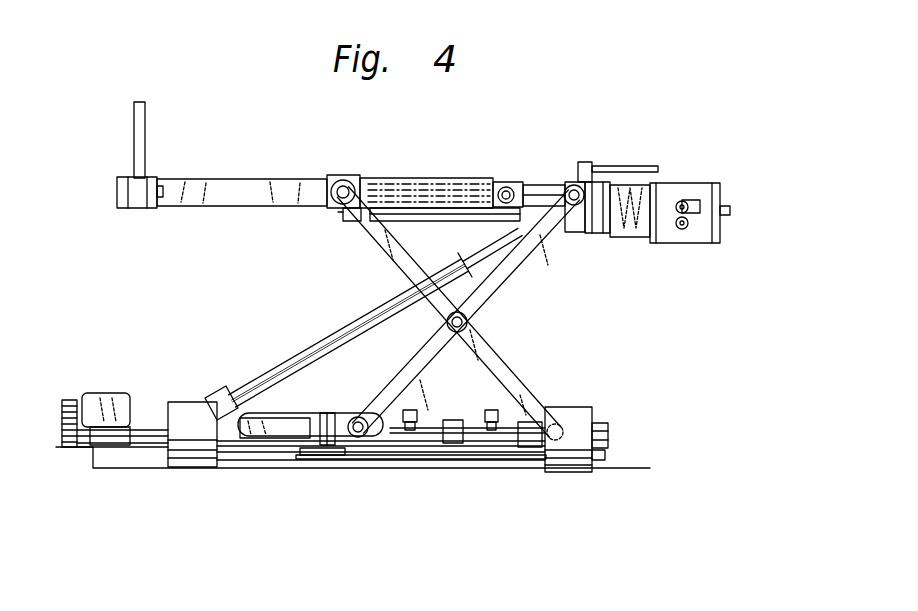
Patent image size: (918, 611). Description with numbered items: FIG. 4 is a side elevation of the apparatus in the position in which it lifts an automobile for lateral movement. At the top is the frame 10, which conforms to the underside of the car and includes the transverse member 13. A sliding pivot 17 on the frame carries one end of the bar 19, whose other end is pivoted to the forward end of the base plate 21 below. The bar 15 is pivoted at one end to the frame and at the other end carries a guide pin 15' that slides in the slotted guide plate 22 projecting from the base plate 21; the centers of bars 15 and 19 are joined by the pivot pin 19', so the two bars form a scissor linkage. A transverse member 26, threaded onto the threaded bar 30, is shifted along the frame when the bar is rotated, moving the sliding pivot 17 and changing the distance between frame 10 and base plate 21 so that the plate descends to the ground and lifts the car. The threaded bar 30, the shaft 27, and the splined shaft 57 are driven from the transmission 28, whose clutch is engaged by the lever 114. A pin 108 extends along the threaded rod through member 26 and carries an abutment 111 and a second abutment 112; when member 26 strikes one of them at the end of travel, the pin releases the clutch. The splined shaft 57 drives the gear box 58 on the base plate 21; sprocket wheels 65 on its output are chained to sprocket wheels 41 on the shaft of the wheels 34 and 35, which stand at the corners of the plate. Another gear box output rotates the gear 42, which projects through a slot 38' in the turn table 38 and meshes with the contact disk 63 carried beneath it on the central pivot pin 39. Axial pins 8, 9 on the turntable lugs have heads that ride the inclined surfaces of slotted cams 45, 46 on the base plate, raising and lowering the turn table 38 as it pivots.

The transverse member 13 is at (134, 135).
The frame 10 is at (240, 178).
The sliding pivot 17 is at (360, 178).
The abutment 111 is at (345, 222).
The pin 108 is at (430, 222).
The transverse member 26 is at (500, 182).
The threaded bar 30 is at (537, 185).
The abutment 112 is at (548, 222).
The transmission 28 is at (674, 243).
The lever 114 is at (688, 200).
The shaft 27 is at (727, 215).
The bar 19 is at (448, 312).
The bar 15 is at (466, 311).
The pivot pin 19' is at (484, 325).
The splined shaft 57 is at (255, 385).
The sprocket wheel 65 is at (67, 400).
The gear box 58 is at (112, 393).
The sprocket wheel 41 is at (62, 448).
The base plate 21 is at (140, 448).
The wheel 35 is at (188, 468).
The slotted guide plate 22 is at (272, 413).
The gear 42 is at (326, 420).
The guide pin 15' is at (356, 463).
The contact disk 63 is at (295, 460).
The slot 38' is at (322, 485).
The axial pin 8 is at (410, 410).
The central pivot pin 39 is at (452, 420).
The axial pin 9 is at (491, 410).
The slotted cam 45 is at (412, 433).
The slotted cam 46 is at (490, 432).
The wheel 34 is at (563, 472).
The turn table 38 is at (615, 441).